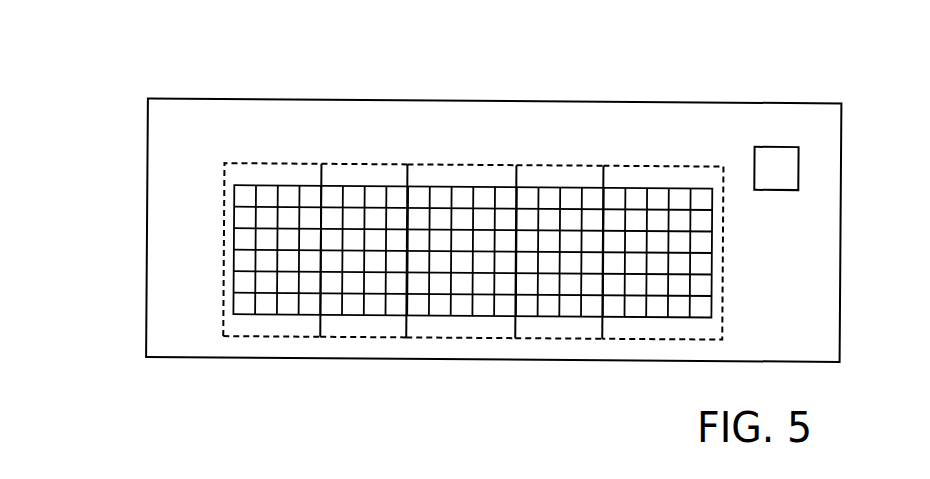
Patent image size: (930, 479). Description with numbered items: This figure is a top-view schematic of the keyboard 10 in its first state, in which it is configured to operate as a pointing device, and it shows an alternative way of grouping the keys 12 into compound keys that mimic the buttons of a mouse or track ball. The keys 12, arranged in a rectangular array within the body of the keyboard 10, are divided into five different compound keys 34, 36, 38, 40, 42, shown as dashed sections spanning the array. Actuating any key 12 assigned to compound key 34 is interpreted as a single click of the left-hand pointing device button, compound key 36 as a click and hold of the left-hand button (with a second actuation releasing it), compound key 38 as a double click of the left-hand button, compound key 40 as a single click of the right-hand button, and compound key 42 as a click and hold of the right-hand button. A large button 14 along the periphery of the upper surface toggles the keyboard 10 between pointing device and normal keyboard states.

The keyboard 10 is at (112, 115).
The keys 12 is at (233, 281).
The button 14 is at (776, 168).
The compound key 34 is at (278, 178).
The compound key 36 is at (363, 178).
The compound key 38 is at (462, 178).
The compound key 40 is at (559, 178).
The compound key 42 is at (668, 178).